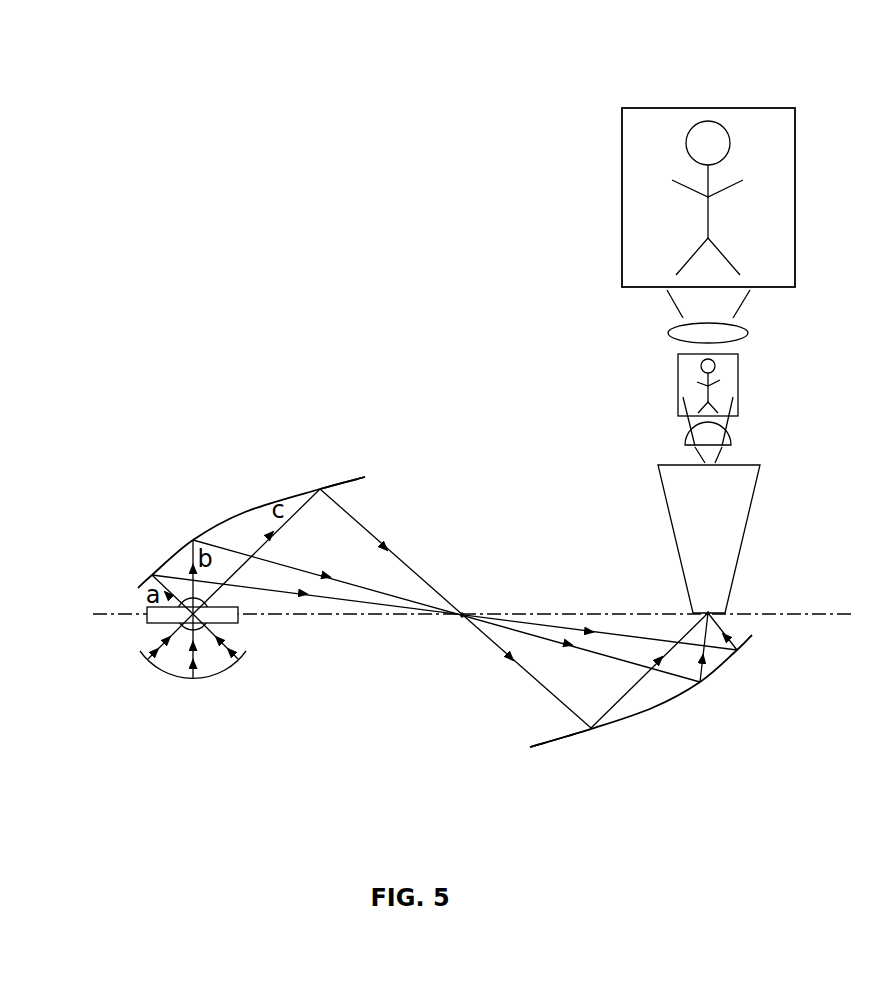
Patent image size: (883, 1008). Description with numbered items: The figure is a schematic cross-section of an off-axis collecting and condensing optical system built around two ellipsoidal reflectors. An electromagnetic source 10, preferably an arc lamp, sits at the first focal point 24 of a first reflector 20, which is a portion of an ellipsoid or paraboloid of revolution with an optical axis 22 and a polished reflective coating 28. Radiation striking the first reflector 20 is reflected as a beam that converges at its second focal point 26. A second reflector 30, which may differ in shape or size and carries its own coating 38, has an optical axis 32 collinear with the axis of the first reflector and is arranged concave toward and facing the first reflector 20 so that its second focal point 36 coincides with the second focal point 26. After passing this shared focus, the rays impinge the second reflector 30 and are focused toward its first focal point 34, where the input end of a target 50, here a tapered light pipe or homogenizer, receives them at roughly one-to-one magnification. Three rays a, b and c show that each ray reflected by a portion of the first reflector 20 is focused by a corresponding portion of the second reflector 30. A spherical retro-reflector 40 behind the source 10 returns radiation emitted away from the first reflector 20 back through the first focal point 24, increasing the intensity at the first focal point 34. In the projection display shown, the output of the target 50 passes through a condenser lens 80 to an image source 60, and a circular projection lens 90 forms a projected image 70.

The electromagnetic source 10 is at (152, 625).
The first reflector 20 is at (237, 512).
The optical axis 22 is at (107, 612).
The first focal point 24 is at (237, 627).
The second focal point 26 is at (462, 612).
The reflective coating 28 is at (348, 480).
The second reflector 30 is at (652, 712).
The optical axis 32 is at (578, 612).
The first focal point 34 is at (721, 614).
The second focal point 36 is at (462, 620).
The coating 38 is at (550, 740).
The retro-reflector 40 is at (208, 679).
The target 50 is at (743, 547).
The image source 60 is at (738, 385).
The projected image 70 is at (797, 197).
The condenser lens 80 is at (732, 435).
The projection lens 90 is at (750, 332).